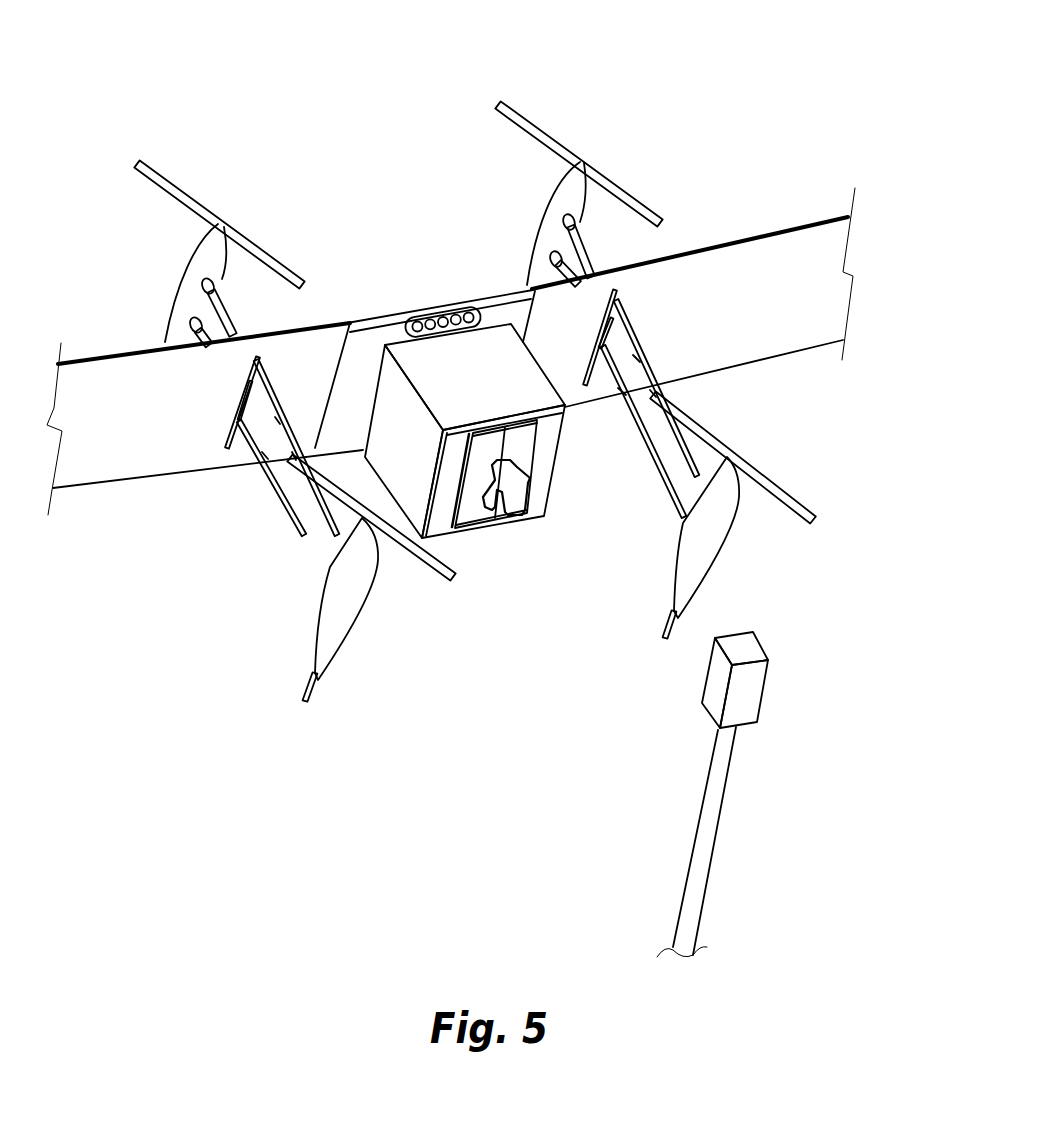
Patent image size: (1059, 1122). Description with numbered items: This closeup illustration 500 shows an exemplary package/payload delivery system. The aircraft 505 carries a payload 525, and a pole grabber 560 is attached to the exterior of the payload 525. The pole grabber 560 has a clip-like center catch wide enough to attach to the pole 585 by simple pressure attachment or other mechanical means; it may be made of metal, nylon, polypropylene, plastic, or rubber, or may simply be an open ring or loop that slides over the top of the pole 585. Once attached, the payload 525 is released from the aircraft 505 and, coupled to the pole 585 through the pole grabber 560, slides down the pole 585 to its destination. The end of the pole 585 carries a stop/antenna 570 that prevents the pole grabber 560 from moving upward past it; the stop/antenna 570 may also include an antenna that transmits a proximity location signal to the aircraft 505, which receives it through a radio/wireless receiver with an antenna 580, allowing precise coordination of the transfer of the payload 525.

The closeup illustration 500 is at (268, 53).
The aircraft 505 is at (709, 153).
The payload 525 is at (530, 403).
The pole grabber 560 is at (497, 518).
The stop/antenna 570 is at (757, 687).
The antenna 580 is at (458, 307).
The pole 585 is at (715, 808).